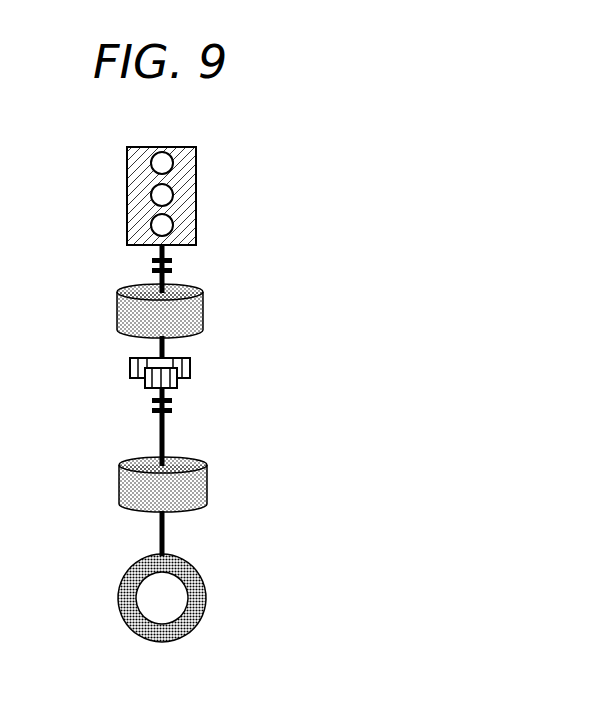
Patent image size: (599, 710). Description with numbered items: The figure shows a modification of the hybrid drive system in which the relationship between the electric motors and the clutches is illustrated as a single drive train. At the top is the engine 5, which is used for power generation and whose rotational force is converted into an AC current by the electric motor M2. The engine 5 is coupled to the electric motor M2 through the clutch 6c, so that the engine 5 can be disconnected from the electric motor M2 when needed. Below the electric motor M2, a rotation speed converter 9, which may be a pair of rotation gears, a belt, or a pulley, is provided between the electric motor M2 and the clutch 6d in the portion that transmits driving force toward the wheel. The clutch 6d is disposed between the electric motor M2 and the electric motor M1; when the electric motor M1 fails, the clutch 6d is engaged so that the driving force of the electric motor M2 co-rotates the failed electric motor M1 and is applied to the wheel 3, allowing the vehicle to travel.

The engine 5 is at (196, 197).
The clutch 6c is at (172, 265).
The electric motor M2 is at (160, 311).
The rotation speed converter 9 is at (130, 373).
The clutch 6d is at (172, 412).
The electric motor M1 is at (163, 484).
The wheel 3 is at (197, 625).